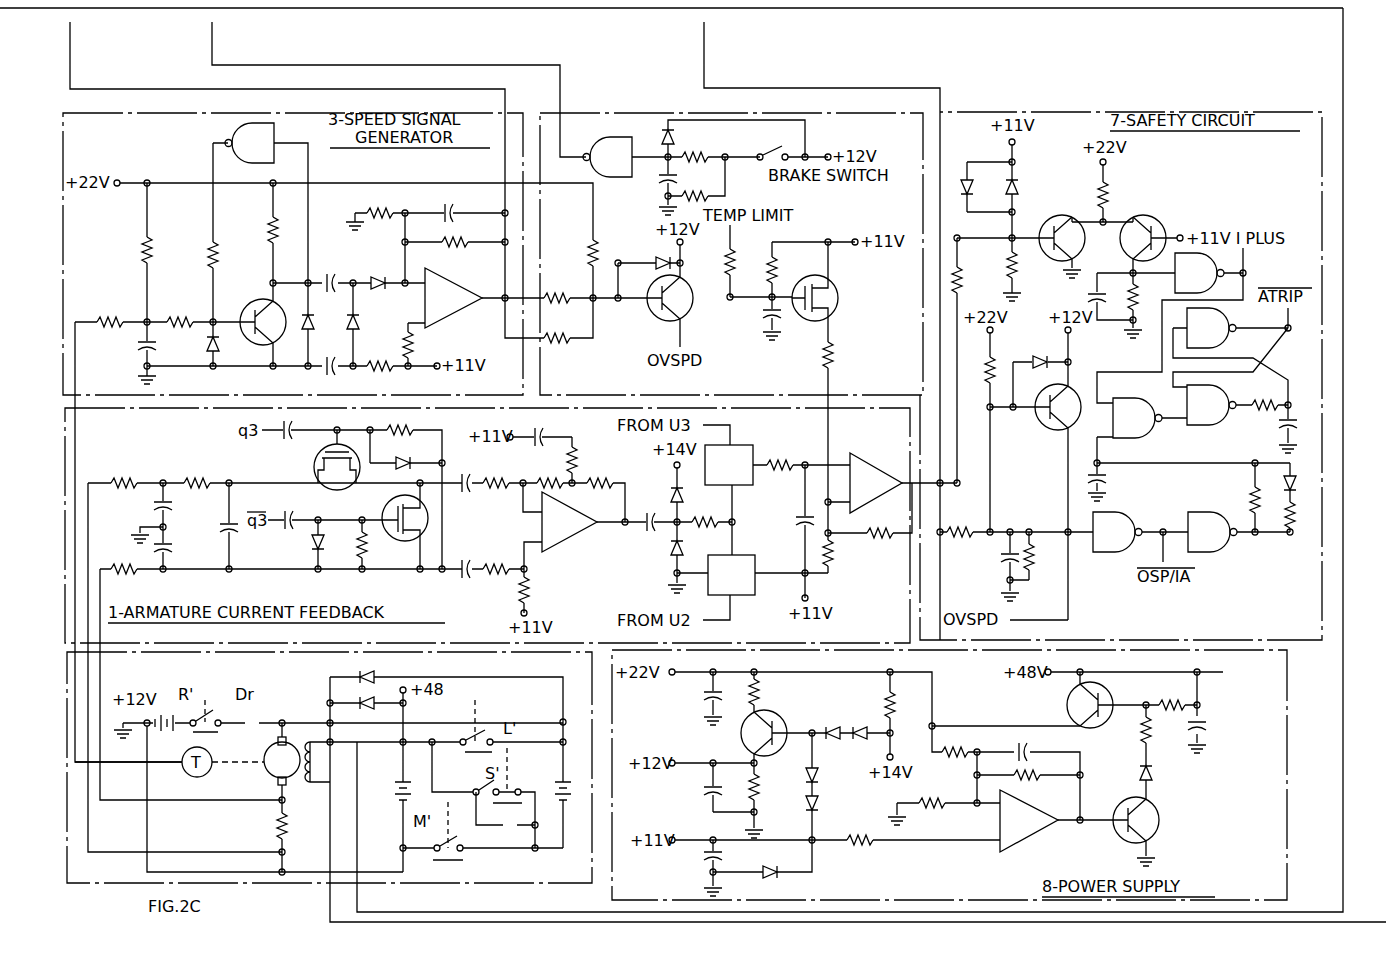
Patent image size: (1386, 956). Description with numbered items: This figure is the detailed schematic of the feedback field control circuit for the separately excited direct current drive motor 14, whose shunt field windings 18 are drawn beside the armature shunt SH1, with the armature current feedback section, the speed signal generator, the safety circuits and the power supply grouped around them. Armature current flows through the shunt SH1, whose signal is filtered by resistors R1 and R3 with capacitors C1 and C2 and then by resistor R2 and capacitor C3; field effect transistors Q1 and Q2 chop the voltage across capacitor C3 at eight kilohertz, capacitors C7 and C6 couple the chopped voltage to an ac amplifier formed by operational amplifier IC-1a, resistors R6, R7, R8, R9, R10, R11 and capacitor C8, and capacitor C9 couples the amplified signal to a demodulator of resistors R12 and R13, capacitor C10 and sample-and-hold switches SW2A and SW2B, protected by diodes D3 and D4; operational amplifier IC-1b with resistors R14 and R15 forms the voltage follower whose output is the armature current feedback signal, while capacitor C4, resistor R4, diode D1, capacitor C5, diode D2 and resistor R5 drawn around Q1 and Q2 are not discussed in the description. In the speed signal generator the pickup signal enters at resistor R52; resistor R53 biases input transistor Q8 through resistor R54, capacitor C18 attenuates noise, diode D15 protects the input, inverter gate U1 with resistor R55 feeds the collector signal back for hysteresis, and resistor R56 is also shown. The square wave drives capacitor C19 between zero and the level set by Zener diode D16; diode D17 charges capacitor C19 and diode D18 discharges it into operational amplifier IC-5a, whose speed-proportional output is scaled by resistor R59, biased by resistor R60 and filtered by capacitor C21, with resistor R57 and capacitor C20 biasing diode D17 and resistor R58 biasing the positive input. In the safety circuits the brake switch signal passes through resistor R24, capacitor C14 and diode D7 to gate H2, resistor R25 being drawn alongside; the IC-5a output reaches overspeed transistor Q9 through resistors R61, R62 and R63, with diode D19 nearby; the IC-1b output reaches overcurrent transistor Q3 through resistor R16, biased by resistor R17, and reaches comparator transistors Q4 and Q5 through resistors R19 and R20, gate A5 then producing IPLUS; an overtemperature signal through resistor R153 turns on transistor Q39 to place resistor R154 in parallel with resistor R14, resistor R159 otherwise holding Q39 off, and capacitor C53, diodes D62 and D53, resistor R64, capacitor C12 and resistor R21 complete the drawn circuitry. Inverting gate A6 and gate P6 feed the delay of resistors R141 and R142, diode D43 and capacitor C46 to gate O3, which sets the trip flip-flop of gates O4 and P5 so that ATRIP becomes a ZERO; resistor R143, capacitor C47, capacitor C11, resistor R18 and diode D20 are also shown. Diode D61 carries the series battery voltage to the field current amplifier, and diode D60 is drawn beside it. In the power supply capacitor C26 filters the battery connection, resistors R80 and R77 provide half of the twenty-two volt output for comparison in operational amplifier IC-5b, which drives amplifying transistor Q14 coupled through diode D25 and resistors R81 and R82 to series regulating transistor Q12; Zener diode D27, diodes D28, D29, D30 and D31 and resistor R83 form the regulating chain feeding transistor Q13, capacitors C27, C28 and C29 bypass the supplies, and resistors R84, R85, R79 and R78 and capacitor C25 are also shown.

The resistor R53 is at (142, 250).
The resistor R55 is at (208, 250).
The resistor R56 is at (270, 230).
The input transistor Q8 is at (248, 300).
The resistor R52 is at (112, 312).
The resistor R54 is at (178, 318).
The capacitor C18 is at (134, 347).
The diode D15 is at (206, 342).
The reference Zener diode D16 is at (326, 333).
The diode D17 is at (356, 317).
The diode D18 is at (372, 268).
The capacitor C19 is at (332, 276).
The capacitor C20 is at (322, 382).
The resistor R57 is at (380, 372).
The resistor R58 is at (398, 346).
The resistor R60 is at (370, 210).
The capacitor C21 is at (446, 204).
The resistor R59 is at (450, 237).
The inverter gate U1 is at (249, 143).
The operational amplifier IC-5a is at (455, 268).
The gate H2 is at (607, 157).
The diode D7 is at (660, 137).
The resistor R24 is at (694, 152).
The resistor R25 is at (694, 192).
The capacitor C14 is at (660, 182).
The resistor R63 is at (588, 242).
The resistor R61 is at (560, 286).
The resistor R62 is at (560, 329).
The diode D19 is at (642, 250).
The overspeed detection transistor Q9 is at (646, 317).
The resistor R153 is at (727, 273).
The capacitor C53 is at (750, 320).
The resistor R159 is at (782, 270).
The transistor Q39 is at (830, 290).
The resistor R154 is at (838, 358).
The diode D62 is at (956, 173).
The diode D53 is at (1024, 184).
The resistor R19 is at (960, 270).
The resistor R20 is at (1009, 277).
The comparator transistor Q4 is at (1051, 217).
The comparator transistor Q5 is at (1154, 218).
The resistor R64 is at (1107, 195).
The capacitor C12 is at (1083, 301).
The resistor R21 is at (1138, 303).
The gate A5 is at (1199, 273).
The gate P5 is at (1211, 328).
The gate O3 is at (1137, 418).
The gate O4 is at (1211, 405).
The resistor R143 is at (1276, 393).
The capacitor C47 is at (1280, 426).
The diode D43 is at (1280, 464).
The resistor R142 is at (1249, 497).
The resistor R141 is at (1298, 523).
The capacitor C46 is at (1108, 480).
The inverting gate A6 is at (1117, 532).
The gate P6 is at (1212, 532).
The resistor R16 is at (964, 528).
The capacitor C11 is at (999, 564).
The resistor R18 is at (1036, 566).
The overcurrent detecting transistor Q3 is at (1040, 435).
The diode D20 is at (1044, 358).
The resistor R17 is at (986, 382).
The resistor R1 is at (126, 476).
The resistor R2 is at (186, 476).
The resistor R3 is at (128, 564).
The capacitor C1 is at (152, 503).
The capacitor C2 is at (176, 554).
The capacitor C3 is at (222, 525).
The capacitor C4 is at (286, 440).
The field effect transistor Q1 is at (314, 466).
The resistor R4 is at (388, 425).
The diode D1 is at (400, 456).
The field effect transistor Q2 is at (383, 507).
The capacitor C5 is at (286, 503).
The diode D2 is at (308, 548).
The resistor R5 is at (368, 552).
The capacitor C6 is at (468, 556).
The capacitor C7 is at (464, 472).
The resistor R6 is at (494, 472).
The resistor R7 is at (492, 558).
The resistor R8 is at (518, 586).
The resistor R9 is at (550, 472).
The resistor R10 is at (602, 474).
The resistor R11 is at (590, 450).
The capacitor C8 is at (534, 428).
The operational amplifier IC-1a is at (576, 517).
The capacitor C9 is at (650, 514).
The diode D4 is at (668, 494).
The diode D3 is at (666, 545).
The resistor R12 is at (704, 514).
The switch SW2B is at (729, 465).
The switch SW2A is at (731, 575).
The resistor R13 is at (790, 454).
The capacitor C10 is at (796, 515).
The resistor R14 is at (836, 556).
The resistor R15 is at (870, 532).
The operational amplifier IC-1b is at (878, 450).
The direct current drive motor 14 is at (268, 765).
The shunt field windings 18 is at (316, 762).
The shunt SH1 is at (276, 824).
The diode D61 is at (376, 676).
The diode D60 is at (376, 704).
The capacitor C27 is at (704, 699).
The resistor R84 is at (760, 700).
The resistor R83 is at (880, 700).
The diode D30 is at (832, 726).
The diode D31 is at (860, 726).
The transistor Q13 is at (740, 736).
The capacitor C28 is at (700, 788).
The resistor R85 is at (762, 790).
The diode D29 is at (820, 780).
The diode D28 is at (824, 806).
The capacitor C29 is at (704, 858).
The Zener diode D27 is at (768, 882).
The resistor R79 is at (862, 848).
The resistor R77 is at (932, 802).
The resistor R80 is at (958, 750).
The capacitor C25 is at (1024, 745).
The resistor R78 is at (1034, 763).
The series regulating transistor Q12 is at (1068, 706).
The resistor R82 is at (1172, 701).
The capacitor C26 is at (1202, 728).
The resistor R81 is at (1140, 744).
The diode D25 is at (1155, 775).
The amplifying transistor Q14 is at (1118, 806).
The operational amplifier IC-5b is at (1030, 840).